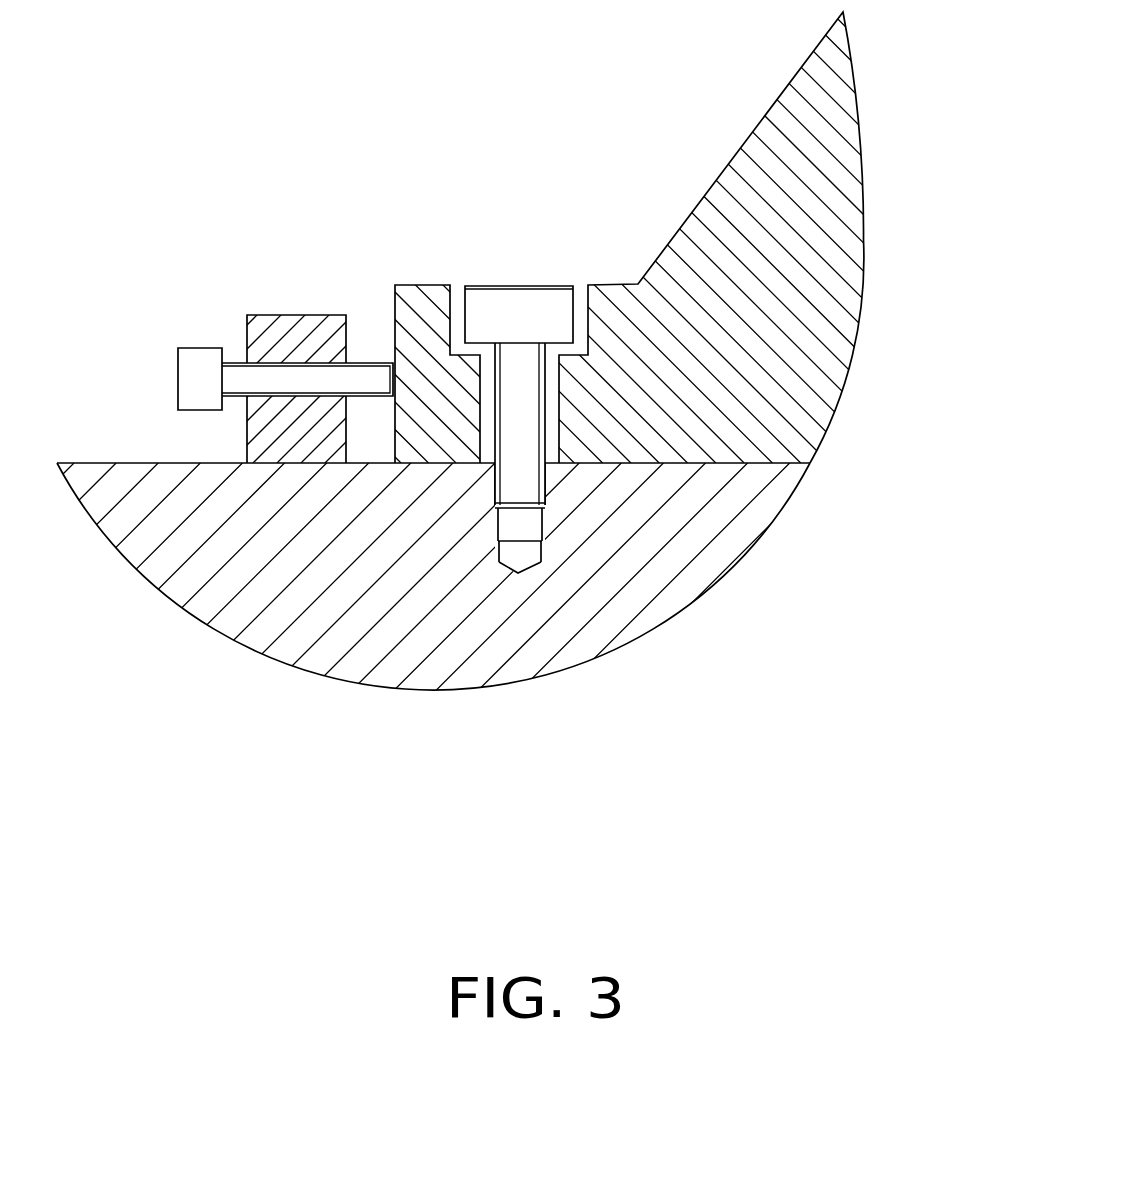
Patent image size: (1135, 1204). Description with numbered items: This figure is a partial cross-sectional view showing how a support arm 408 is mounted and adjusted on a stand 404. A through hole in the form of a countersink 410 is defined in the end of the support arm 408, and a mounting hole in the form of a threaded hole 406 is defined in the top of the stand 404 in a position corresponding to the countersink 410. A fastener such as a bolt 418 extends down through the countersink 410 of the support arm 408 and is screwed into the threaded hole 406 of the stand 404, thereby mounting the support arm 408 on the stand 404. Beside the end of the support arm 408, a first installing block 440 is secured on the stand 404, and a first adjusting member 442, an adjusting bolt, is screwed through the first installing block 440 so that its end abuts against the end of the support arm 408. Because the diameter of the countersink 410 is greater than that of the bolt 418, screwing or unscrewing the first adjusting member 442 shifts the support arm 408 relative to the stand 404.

The stand 404 is at (777, 486).
The threaded hole 406 is at (525, 552).
The support arm 408 is at (755, 148).
The countersink 410 is at (485, 373).
The bolt 418 is at (528, 305).
The first installing block 440 is at (303, 327).
The first adjusting member 442 is at (195, 362).